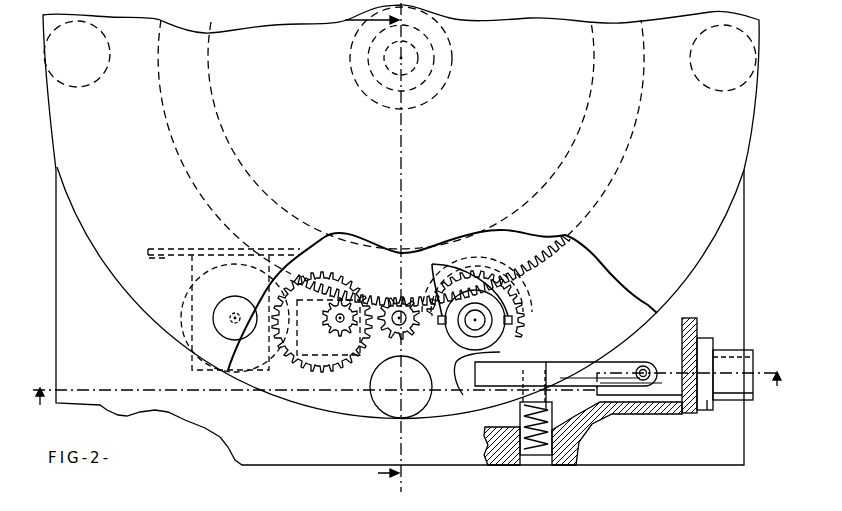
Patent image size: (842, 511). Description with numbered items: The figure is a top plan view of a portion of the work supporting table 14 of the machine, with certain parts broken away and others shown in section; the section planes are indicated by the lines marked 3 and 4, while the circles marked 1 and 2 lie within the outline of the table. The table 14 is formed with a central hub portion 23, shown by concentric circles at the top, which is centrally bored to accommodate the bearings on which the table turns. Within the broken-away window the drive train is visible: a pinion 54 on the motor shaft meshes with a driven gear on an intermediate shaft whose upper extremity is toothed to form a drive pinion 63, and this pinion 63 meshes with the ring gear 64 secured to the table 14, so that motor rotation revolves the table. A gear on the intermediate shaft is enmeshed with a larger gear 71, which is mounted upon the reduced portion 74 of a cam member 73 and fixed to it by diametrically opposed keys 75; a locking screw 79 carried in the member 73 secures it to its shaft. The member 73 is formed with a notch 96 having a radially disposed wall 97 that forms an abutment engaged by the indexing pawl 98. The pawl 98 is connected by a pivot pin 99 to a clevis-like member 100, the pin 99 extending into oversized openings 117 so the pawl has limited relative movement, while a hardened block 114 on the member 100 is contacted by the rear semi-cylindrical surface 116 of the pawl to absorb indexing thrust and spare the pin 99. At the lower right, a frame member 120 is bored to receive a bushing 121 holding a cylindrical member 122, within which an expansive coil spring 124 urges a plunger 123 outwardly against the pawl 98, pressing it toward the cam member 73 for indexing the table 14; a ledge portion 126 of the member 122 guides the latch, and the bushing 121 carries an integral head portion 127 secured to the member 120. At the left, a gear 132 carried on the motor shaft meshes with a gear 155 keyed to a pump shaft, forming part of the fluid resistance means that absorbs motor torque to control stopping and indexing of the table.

The section view circle 1 is at (401, 387).
The section view circle 2 is at (723, 58).
The section line 3- 3 is at (413, 382).
The section line 4- 4 is at (222, 247).
The work supporting table 14 is at (738, 155).
The central hub portion 23 is at (446, 73).
The pinion 54 is at (339, 306).
The drive pinion 63 is at (395, 300).
The ring gear 64 is at (545, 259).
The gear 71 is at (533, 312).
The member 73 is at (518, 350).
The portion 74 is at (508, 324).
The keys 75 is at (460, 290).
The locking screw 79 is at (463, 355).
The notch 96 is at (472, 385).
The radially disposed wall 97 is at (470, 372).
The indexing pawl 98 is at (578, 378).
The pivot pin 99 is at (640, 368).
The clevis-like member 100 is at (642, 364).
The block 114 is at (681, 365).
The rear semi-cylindrical surface 116 is at (645, 392).
The openings 117 is at (625, 388).
The member 120 is at (613, 414).
The bushing 121 is at (588, 446).
The cylindrical member 122 is at (552, 407).
The plunger 123 is at (522, 388).
The expansive coil spring 124 is at (535, 460).
The ledge portion 126 is at (580, 362).
The head portion 127 is at (578, 462).
The gear 132 is at (325, 360).
The gear 155 is at (258, 355).